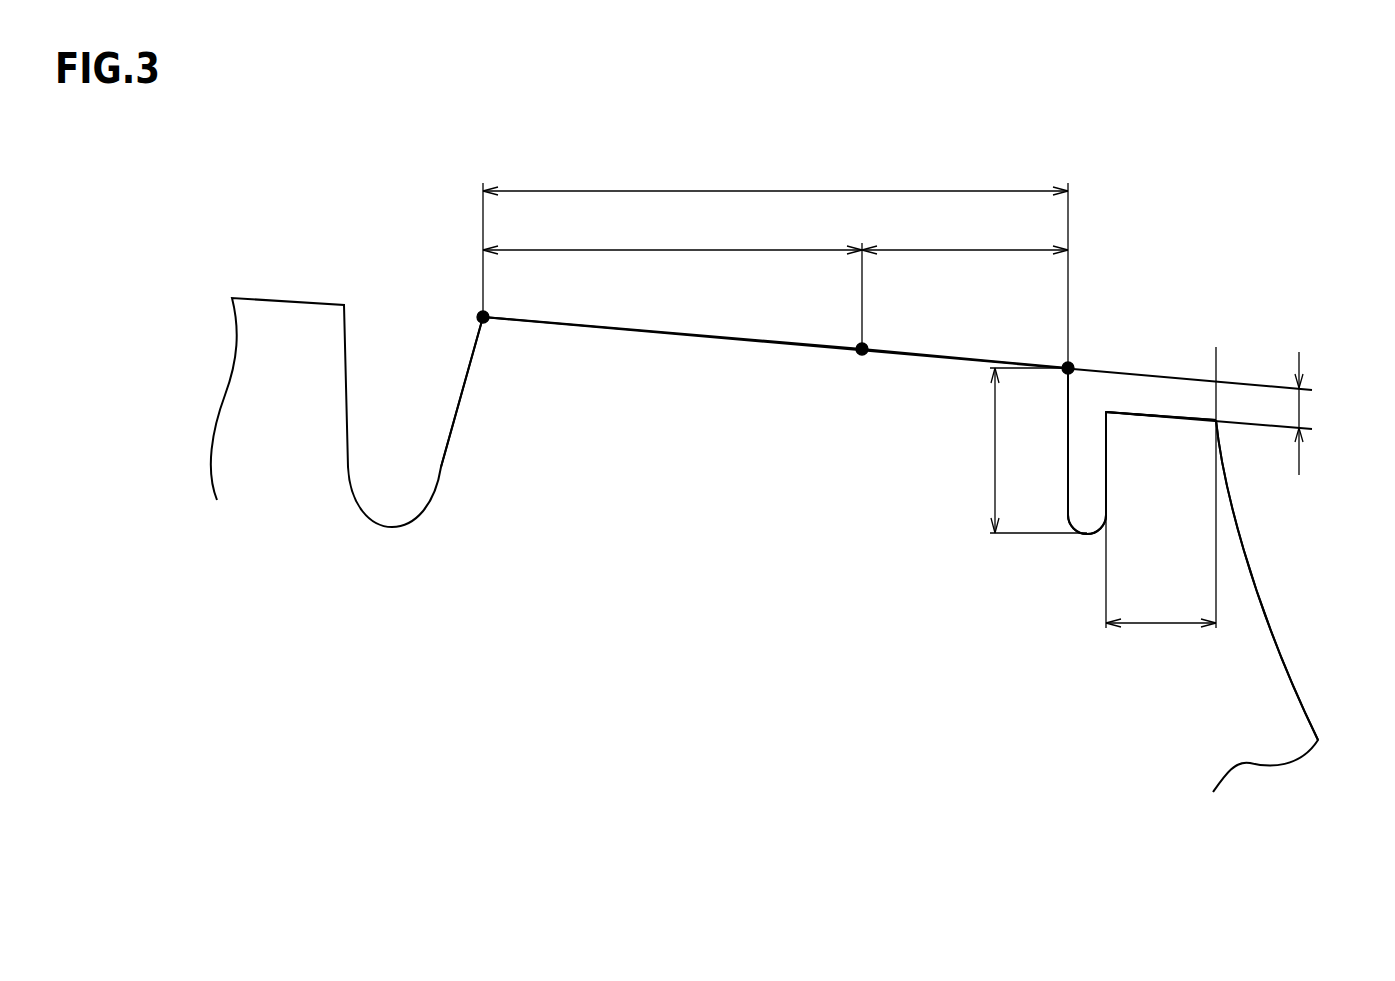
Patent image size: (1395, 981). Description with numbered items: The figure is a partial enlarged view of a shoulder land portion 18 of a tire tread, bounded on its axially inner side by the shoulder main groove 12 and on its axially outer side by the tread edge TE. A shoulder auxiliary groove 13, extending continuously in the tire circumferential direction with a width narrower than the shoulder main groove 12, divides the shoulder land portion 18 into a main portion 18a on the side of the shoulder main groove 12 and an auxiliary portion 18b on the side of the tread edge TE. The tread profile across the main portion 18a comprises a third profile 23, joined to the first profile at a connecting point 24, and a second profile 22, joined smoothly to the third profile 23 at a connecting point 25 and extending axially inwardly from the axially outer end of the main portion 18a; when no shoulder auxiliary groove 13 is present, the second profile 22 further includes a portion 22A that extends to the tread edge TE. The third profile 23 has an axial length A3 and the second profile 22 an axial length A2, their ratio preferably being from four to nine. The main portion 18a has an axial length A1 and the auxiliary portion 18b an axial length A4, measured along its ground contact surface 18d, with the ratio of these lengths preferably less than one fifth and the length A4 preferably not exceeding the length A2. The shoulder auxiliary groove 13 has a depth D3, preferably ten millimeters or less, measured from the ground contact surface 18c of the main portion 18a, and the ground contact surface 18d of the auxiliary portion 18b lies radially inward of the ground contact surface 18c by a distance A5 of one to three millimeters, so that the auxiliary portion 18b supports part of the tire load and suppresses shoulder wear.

The shoulder main groove 12 is at (383, 383).
The shoulder auxiliary groove 13 is at (1086, 475).
The shoulder land portion 18 is at (1048, 590).
The main portion 18a is at (537, 415).
The auxiliary portion 18b is at (1214, 348).
The ground contact surface of the main portion 18c is at (927, 353).
The ground contact surface of the auxiliary portion 18d is at (1118, 410).
The second profile 22 is at (983, 358).
The portion of the second profile extending to the tread edge 22A is at (1168, 440).
The third profile 23 is at (672, 332).
The connecting point 24 is at (482, 314).
The connecting point 25 is at (861, 352).
The tread edge TE is at (1216, 360).
The axial length of the main portion A1 is at (775, 260).
The axial length of the second profile A2 is at (965, 237).
The axial length of the third profile A3 is at (672, 281).
The axial length of the auxiliary portion A4 is at (1161, 571).
The radial distance between ground contact surfaces A5 is at (1323, 413).
The depth of the shoulder auxiliary groove D3 is at (1038, 450).